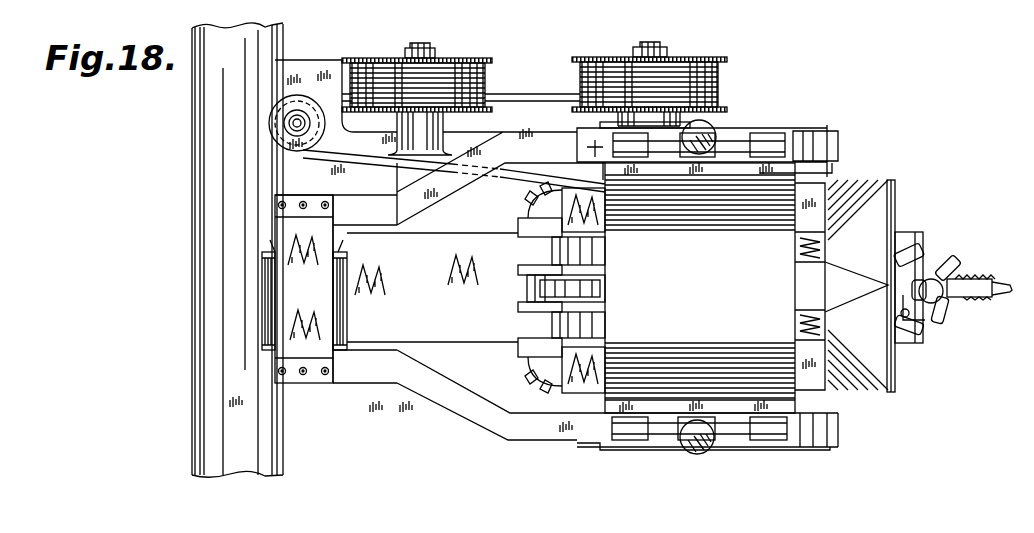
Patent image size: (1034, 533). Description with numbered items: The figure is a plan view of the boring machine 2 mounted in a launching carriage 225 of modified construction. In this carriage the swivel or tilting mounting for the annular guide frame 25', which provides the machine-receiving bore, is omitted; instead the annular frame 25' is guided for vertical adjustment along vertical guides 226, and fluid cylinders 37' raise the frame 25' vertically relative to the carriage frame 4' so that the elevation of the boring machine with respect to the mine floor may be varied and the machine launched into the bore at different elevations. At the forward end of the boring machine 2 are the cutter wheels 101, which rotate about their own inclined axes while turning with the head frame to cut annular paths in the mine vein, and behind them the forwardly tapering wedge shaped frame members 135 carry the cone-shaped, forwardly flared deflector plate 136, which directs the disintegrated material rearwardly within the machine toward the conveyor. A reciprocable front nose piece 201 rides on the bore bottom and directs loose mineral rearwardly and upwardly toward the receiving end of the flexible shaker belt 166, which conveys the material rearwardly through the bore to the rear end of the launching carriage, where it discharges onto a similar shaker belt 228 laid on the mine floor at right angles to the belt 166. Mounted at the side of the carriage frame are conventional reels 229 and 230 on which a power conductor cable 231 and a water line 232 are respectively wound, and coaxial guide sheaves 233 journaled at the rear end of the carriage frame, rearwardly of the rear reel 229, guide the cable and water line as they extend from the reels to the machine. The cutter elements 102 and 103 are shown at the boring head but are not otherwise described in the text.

The shaker belt 228 is at (212, 163).
The guide sheaves 233 is at (296, 106).
The reel 229 is at (378, 60).
The power conductor cable 231 is at (470, 73).
The reel 230 is at (608, 62).
The water line 232 is at (697, 72).
The vertical guides 226 is at (767, 133).
The fluid cylinders 37' is at (732, 281).
The annular guide frame 25' is at (732, 288).
The shaker belt 166 is at (474, 332).
The carriage frame 4' is at (455, 395).
The launching carriage 225 is at (502, 427).
The boring machine 2 is at (895, 176).
The wedge shaped frame members 135 is at (843, 198).
The deflector plate 136 is at (884, 203).
The front nose piece 201 is at (900, 240).
The cutter bit 102 is at (925, 250).
The cutter wheels 101 is at (934, 264).
The cutter arm link 103 is at (928, 323).